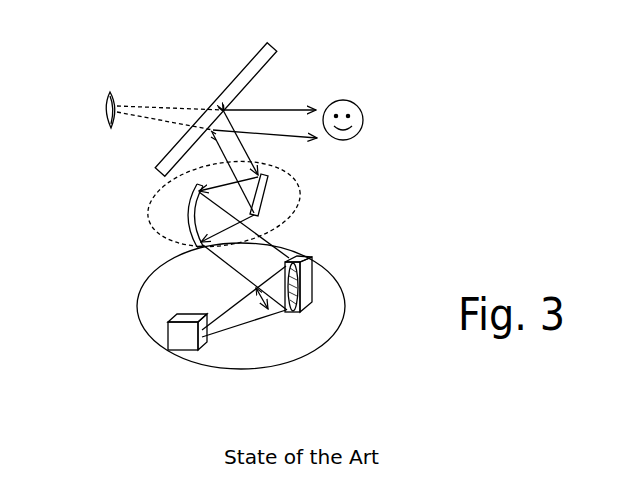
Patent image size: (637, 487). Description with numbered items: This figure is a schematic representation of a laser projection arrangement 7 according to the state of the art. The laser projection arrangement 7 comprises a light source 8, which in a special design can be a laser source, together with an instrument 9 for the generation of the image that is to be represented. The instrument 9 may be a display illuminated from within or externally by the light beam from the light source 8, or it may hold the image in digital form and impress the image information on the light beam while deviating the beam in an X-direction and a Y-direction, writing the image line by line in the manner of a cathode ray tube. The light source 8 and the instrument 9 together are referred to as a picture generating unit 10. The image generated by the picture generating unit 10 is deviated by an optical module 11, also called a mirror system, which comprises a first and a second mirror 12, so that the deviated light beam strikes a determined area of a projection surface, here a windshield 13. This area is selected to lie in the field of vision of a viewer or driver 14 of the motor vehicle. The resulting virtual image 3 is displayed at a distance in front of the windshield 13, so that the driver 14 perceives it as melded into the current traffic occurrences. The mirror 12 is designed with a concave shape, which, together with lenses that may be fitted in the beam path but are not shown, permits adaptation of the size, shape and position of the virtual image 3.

The virtual image 3 is at (102, 106).
The laser projection arrangement 7 is at (93, 172).
The light source 8 is at (168, 334).
The instrument for the generation of the image 9 is at (312, 265).
The picture generating unit 10 is at (337, 340).
The optical module 11 is at (293, 209).
The mirror 12 is at (181, 215).
The windshield 13 is at (258, 65).
The driver 14 is at (353, 103).